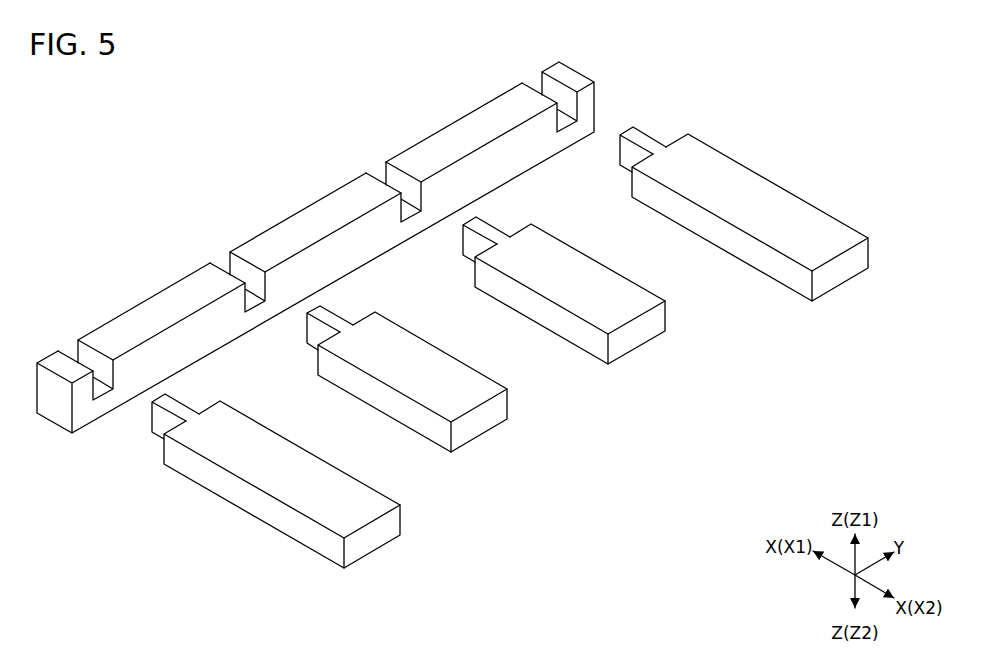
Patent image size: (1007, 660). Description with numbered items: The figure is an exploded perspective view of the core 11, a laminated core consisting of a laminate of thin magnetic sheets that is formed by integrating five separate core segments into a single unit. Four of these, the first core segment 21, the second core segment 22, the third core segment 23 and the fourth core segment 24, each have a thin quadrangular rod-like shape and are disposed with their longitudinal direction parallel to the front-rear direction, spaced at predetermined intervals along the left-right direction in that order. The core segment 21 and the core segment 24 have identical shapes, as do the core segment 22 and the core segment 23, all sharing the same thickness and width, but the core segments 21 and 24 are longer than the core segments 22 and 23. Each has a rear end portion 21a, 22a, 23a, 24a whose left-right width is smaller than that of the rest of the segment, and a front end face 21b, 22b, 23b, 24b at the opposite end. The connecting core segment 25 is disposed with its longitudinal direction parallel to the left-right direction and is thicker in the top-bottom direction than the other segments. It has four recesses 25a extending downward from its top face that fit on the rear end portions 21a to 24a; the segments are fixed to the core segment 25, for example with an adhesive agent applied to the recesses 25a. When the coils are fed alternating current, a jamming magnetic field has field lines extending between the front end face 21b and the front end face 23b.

The core 11 is at (184, 167).
The core segment 21 is at (744, 216).
The rear end portion 21a is at (653, 153).
The front end face 21b is at (840, 282).
The core segment 22 is at (564, 291).
The rear end portion 22a is at (498, 243).
The front end face 22b is at (629, 339).
The core segment 23 is at (407, 380).
The rear end portion 23a is at (340, 332).
The front end face 23b is at (472, 429).
The core segment 24 is at (276, 485).
The rear end portion 24a is at (185, 421).
The front end face 24b is at (368, 547).
The core segment 25 is at (315, 221).
The recess 25a is at (84, 350).